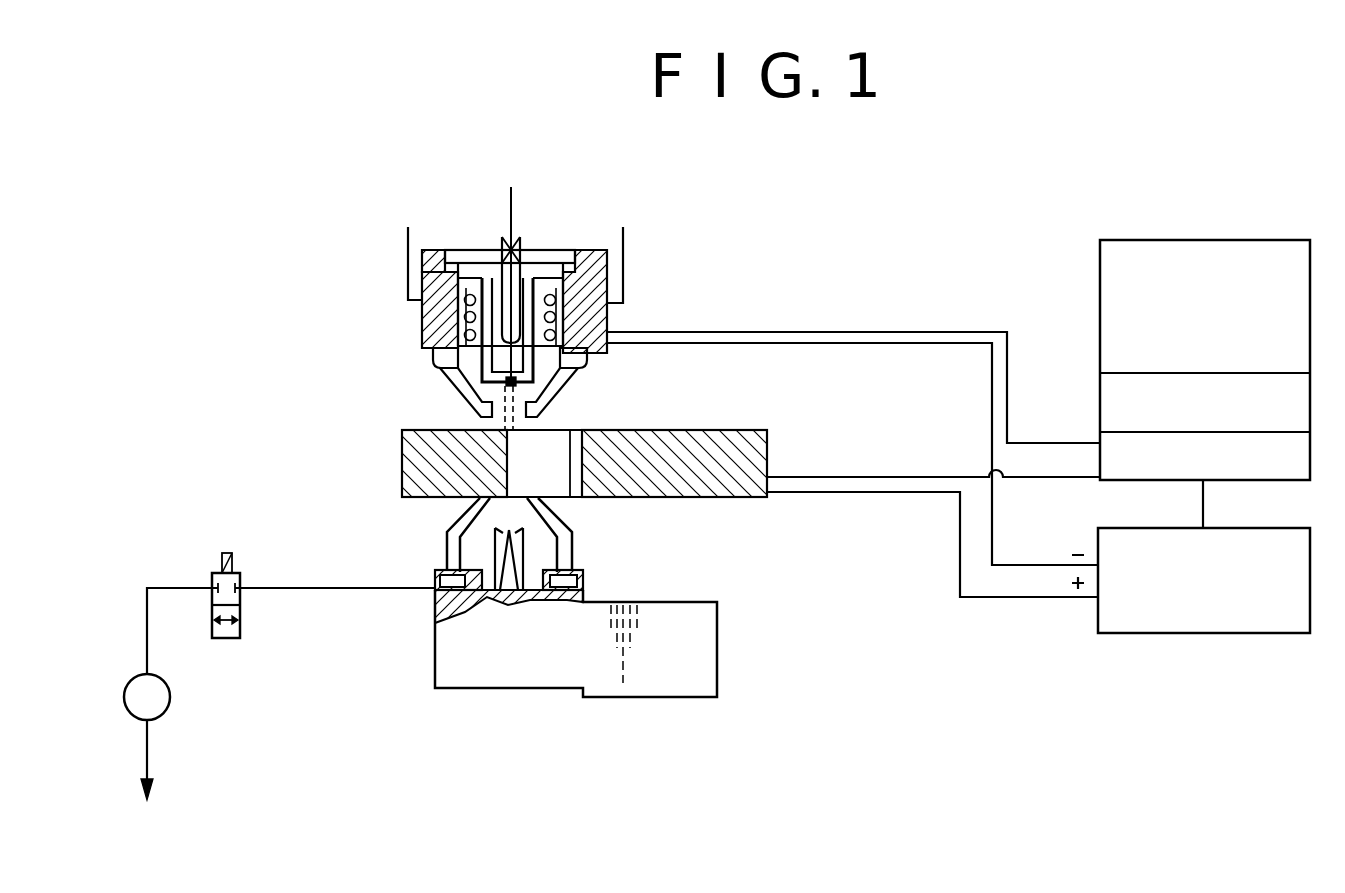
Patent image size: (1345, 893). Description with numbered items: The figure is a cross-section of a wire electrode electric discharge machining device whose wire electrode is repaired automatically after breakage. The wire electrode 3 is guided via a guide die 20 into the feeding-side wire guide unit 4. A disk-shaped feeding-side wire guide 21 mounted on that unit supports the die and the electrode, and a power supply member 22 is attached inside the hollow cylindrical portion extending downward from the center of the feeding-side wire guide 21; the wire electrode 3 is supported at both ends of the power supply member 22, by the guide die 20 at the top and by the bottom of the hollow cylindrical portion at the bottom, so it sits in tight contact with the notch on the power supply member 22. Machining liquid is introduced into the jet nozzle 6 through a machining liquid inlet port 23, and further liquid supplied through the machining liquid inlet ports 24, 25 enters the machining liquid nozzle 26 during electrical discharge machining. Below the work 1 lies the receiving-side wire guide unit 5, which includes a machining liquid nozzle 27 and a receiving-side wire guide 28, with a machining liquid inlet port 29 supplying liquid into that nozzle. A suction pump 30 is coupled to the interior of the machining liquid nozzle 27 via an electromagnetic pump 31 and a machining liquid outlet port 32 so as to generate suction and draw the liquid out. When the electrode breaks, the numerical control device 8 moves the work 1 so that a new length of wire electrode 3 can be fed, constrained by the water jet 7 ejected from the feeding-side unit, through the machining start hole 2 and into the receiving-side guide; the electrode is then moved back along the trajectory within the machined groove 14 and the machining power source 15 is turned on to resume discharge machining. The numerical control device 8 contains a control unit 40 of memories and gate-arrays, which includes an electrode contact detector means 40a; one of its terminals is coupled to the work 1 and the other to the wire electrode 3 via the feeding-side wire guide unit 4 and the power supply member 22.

The work 1 is at (768, 460).
The machining start hole 2 is at (560, 500).
The wire electrode 3 is at (512, 212).
The feeding-side wire guide unit 4 is at (610, 316).
The receiving-side wire guide unit 5 is at (628, 697).
The jet nozzle 6 is at (590, 370).
The water jet 7 is at (500, 397).
The numerical control device 8 is at (1203, 328).
The machined groove 14 is at (577, 503).
The machining power source 15 is at (1204, 556).
The guide die 20 is at (521, 238).
The feeding-side wire guide 21 is at (580, 246).
The power supply member 22 is at (507, 277).
The machining liquid inlet port 23 is at (422, 272).
The machining liquid inlet port 24 is at (428, 318).
The machining liquid inlet port 25 is at (452, 371).
The machining liquid nozzle 26 is at (560, 402).
The machining liquid nozzle 27 is at (445, 556).
The receiving-side wire guide 28 is at (453, 535).
The machining liquid inlet port 29 is at (582, 583).
The suction pump 30 is at (170, 692).
The electromagnetic pump 31 is at (230, 640).
The machining liquid outlet port 32 is at (447, 610).
The control unit 40 is at (1205, 401).
The electrode contact detector means 40a is at (1205, 457).